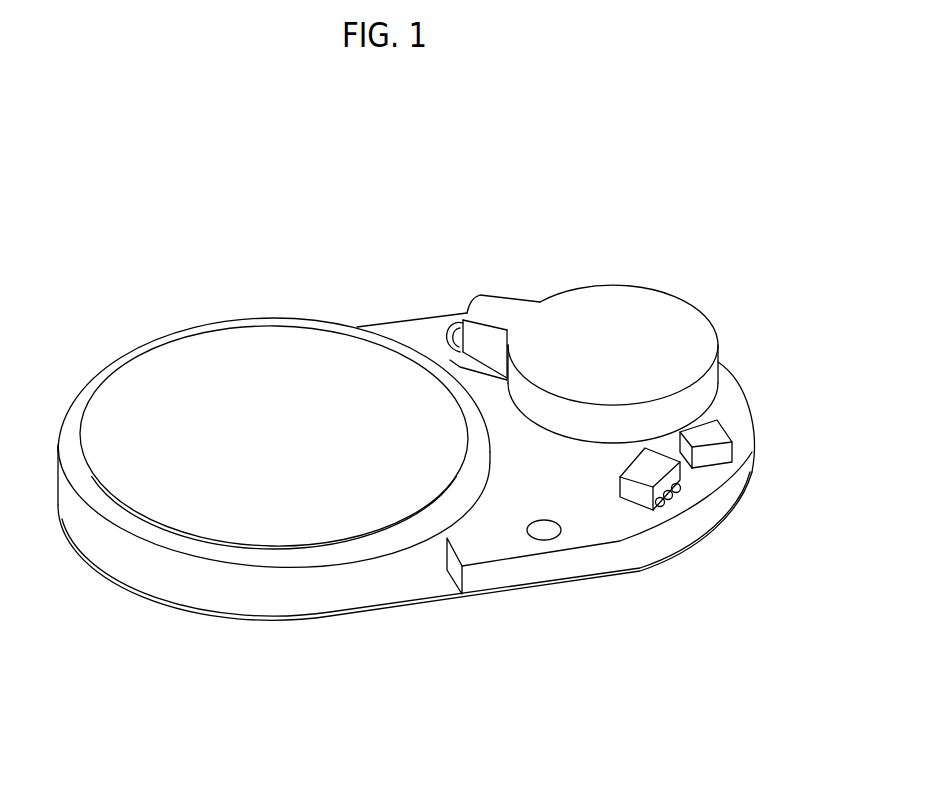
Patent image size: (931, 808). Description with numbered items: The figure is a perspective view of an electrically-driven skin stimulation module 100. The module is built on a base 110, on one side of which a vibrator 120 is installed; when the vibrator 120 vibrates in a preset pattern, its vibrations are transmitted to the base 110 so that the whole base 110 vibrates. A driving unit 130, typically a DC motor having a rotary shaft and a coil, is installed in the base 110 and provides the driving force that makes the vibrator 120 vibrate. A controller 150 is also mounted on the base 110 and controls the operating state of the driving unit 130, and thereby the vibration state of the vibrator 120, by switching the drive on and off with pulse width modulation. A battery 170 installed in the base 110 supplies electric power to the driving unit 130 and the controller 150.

The electrically-driven skin stimulation module 100 is at (80, 187).
The base 110 is at (432, 598).
The vibrator 120 is at (642, 305).
The driving unit 130 is at (712, 460).
The controller 150 is at (638, 497).
The battery 170 is at (277, 373).